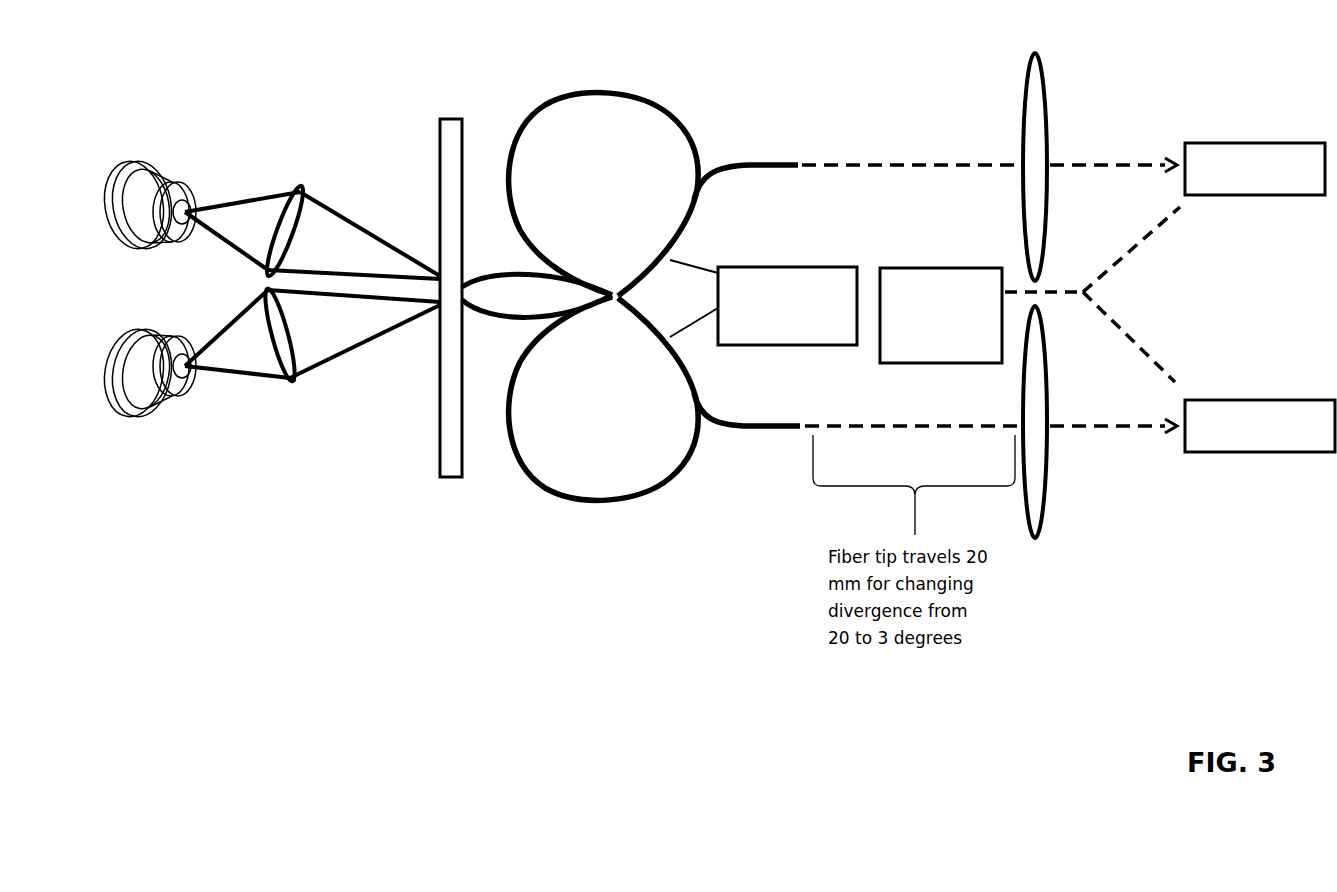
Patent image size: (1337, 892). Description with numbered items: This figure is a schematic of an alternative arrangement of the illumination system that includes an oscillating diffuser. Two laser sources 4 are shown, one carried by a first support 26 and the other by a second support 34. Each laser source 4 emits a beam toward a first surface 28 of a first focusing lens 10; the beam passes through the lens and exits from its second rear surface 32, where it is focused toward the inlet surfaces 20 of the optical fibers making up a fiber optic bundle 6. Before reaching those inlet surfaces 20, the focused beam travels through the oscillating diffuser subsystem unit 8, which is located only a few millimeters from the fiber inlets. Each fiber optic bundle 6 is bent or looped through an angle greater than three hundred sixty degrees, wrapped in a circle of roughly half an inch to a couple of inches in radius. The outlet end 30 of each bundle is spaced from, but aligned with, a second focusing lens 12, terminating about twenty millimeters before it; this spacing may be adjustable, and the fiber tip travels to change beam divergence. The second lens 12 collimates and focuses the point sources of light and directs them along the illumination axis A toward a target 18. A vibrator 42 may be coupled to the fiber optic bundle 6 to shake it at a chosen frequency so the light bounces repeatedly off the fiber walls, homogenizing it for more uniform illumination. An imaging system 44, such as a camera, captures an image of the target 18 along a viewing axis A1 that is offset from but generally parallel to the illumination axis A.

The laser source 4 is at (115, 289).
The first support 26 is at (103, 214).
The second support 34 is at (100, 370).
The first (focusing) lens 10 is at (300, 190).
The first surface 28 is at (287, 193).
The second rear surface 32 is at (305, 197).
The oscillating diffuser subsystem unit 8 is at (447, 118).
The inlet surface 20 is at (460, 302).
The fiber optic bundle 6 is at (537, 107).
The outlet end 30 is at (780, 162).
The vibrator 42 is at (768, 267).
The imaging system 44 is at (943, 267).
The second (focusing) lens 12 is at (1037, 53).
The target 18 is at (1213, 140).
The illumination axis A is at (1112, 165).
The viewing axis A1 is at (1136, 252).